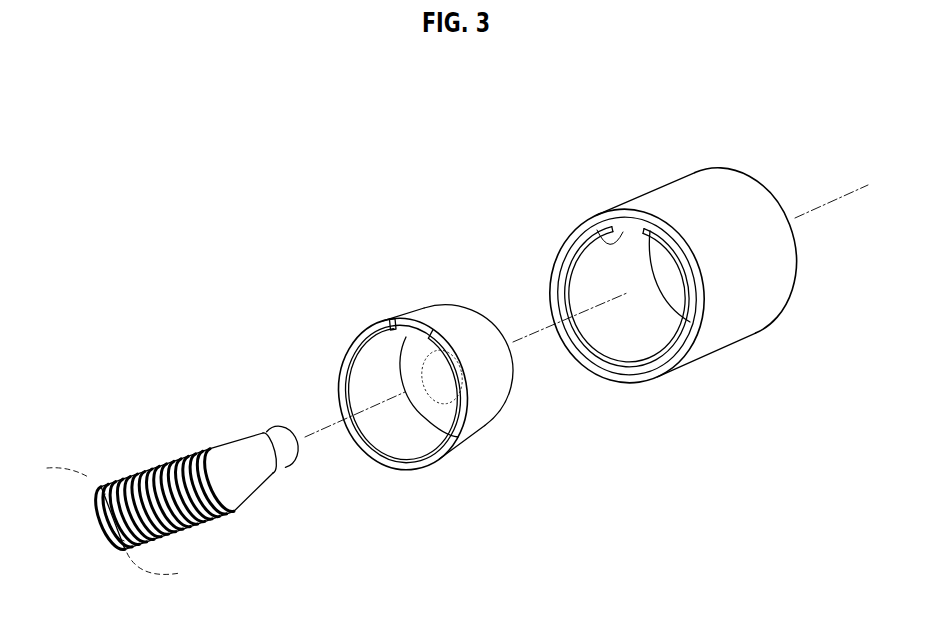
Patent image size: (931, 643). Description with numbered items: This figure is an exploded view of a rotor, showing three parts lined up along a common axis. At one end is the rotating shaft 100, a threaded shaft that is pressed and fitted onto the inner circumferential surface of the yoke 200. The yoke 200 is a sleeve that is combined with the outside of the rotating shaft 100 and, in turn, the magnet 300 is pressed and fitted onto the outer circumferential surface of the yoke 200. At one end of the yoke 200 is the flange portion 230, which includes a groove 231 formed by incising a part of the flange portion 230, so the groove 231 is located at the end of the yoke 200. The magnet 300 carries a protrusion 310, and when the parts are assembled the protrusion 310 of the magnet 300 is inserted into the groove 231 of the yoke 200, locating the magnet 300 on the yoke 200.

The rotating shaft 100 is at (240, 452).
The yoke 200 is at (497, 420).
The flange portion 230 is at (417, 463).
The groove 231 is at (394, 322).
The magnet 300 is at (683, 205).
The protrusion 310 is at (585, 230).